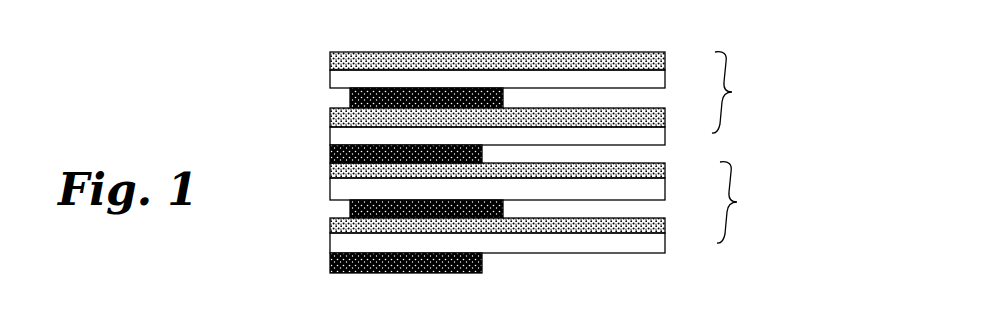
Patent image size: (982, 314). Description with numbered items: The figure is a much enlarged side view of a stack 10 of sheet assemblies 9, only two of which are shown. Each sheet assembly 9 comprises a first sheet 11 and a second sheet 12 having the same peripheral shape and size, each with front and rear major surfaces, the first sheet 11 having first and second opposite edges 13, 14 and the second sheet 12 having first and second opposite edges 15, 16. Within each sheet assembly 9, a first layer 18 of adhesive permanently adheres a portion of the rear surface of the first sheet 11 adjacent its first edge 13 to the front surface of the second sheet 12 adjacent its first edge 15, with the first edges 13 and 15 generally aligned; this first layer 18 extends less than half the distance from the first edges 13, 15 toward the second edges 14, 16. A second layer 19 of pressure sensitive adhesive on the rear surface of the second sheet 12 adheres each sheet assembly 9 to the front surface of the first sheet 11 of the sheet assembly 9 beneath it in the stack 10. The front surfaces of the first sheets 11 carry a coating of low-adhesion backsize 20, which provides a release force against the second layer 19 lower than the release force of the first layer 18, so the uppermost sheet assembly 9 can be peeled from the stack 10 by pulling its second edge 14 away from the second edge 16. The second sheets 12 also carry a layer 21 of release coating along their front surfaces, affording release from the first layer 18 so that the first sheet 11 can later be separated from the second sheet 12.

The sheet assembly 9 is at (738, 147).
The stack of sheet assemblies 10 is at (807, 55).
The first sheet 11 is at (668, 66).
The second sheet 12 is at (668, 143).
The first edge of first sheet 13 is at (330, 76).
The second edge of first sheet 14 is at (667, 76).
The first edge of second sheet 15 is at (330, 138).
The second edge of second sheet 16 is at (667, 126).
The first layer of adhesive 18 is at (350, 98).
The second layer of pressure sensitive adhesive 19 is at (330, 158).
The low-adhesion backsize coating 20 is at (330, 55).
The release coating layer 21 is at (330, 118).